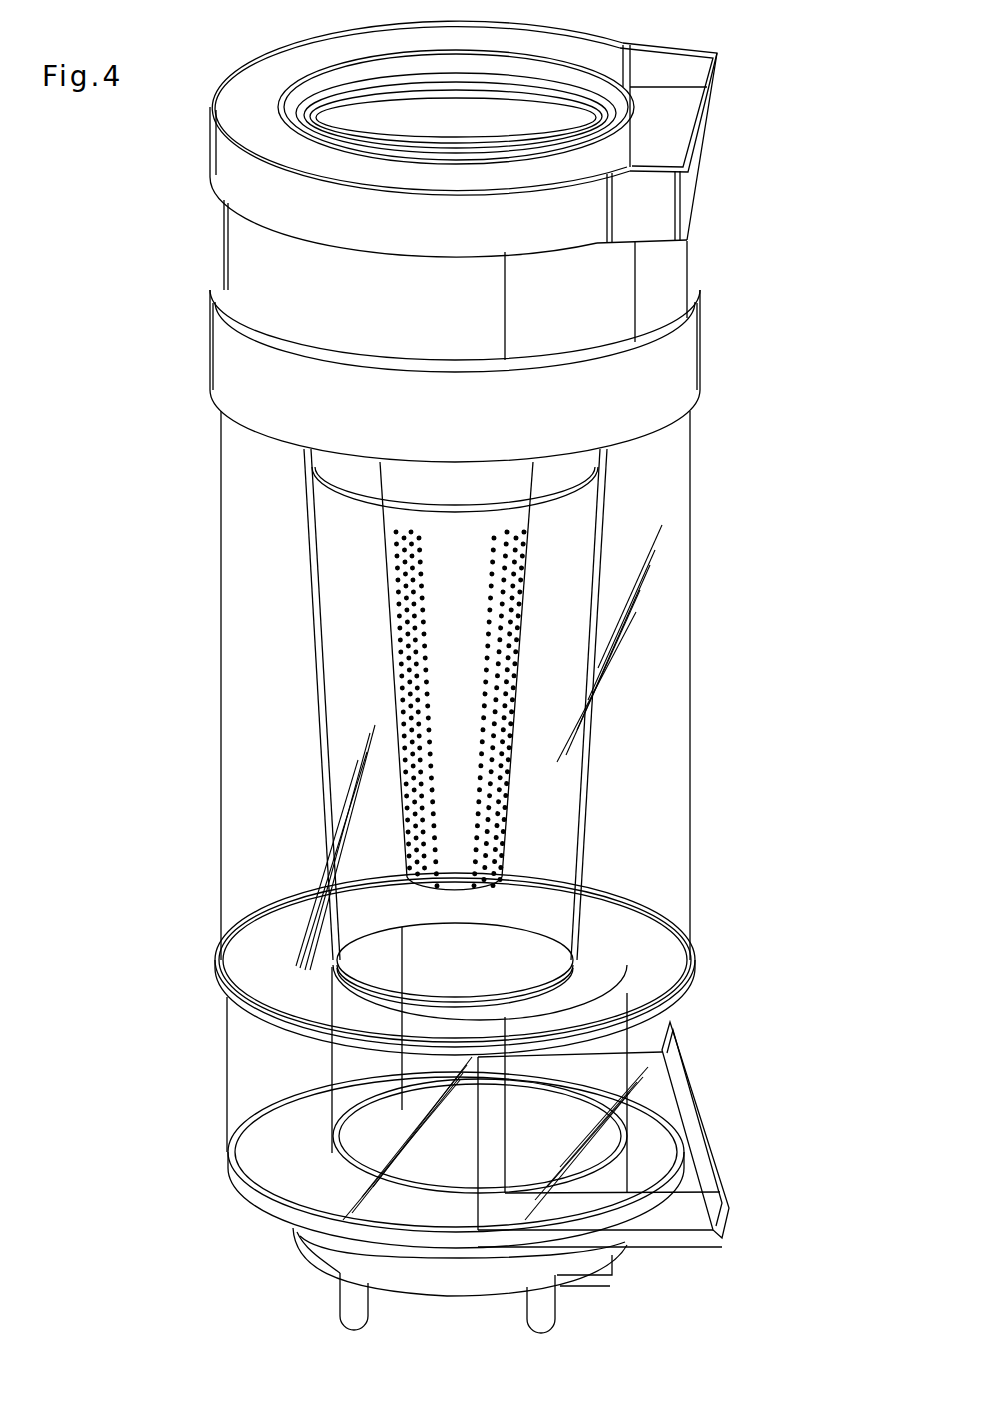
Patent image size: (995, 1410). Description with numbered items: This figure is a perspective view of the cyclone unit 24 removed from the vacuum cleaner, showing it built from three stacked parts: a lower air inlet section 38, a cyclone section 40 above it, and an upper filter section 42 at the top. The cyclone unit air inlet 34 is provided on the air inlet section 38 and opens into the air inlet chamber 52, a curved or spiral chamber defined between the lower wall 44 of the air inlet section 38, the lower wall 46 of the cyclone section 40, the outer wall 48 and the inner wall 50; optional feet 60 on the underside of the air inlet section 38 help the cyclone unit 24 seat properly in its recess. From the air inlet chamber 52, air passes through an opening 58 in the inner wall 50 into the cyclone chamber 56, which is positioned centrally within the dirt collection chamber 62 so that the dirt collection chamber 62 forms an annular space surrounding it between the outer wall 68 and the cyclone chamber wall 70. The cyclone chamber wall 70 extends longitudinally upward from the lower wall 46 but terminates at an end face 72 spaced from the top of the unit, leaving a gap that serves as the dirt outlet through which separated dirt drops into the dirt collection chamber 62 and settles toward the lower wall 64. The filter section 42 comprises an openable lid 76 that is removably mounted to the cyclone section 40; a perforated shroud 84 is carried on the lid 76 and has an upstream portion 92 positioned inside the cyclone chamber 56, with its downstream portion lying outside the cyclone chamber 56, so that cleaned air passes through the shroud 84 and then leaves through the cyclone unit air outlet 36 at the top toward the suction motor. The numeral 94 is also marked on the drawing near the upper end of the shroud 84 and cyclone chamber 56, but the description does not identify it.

The cyclone unit 24 is at (172, 677).
The cyclone unit air inlet 34 is at (678, 1218).
The cyclone unit air outlet 36 is at (492, 127).
The lower air inlet section 38 is at (738, 962).
The cyclone section 40 is at (732, 265).
The upper filter section 42 is at (737, 50).
The lower wall of air inlet section 44 is at (257, 1152).
The lower wall of cyclone section 46 is at (240, 965).
The outer wall 48 is at (227, 1033).
The inner wall 50 is at (337, 1008).
The air inlet chamber 52 is at (270, 1067).
The cyclone chamber 56 is at (335, 662).
The opening 58 is at (433, 963).
The feet 60 is at (557, 1312).
The dirt collection chamber 62 is at (243, 538).
The lower wall 64 is at (257, 933).
The outer wall 68 is at (218, 742).
The cyclone chamber wall 70 is at (312, 606).
The end face 72 is at (305, 462).
The openable lid 76 is at (245, 247).
The perforated shroud 84 is at (450, 828).
The upstream portion 92 is at (460, 773).
The filter opening 94 is at (500, 478).